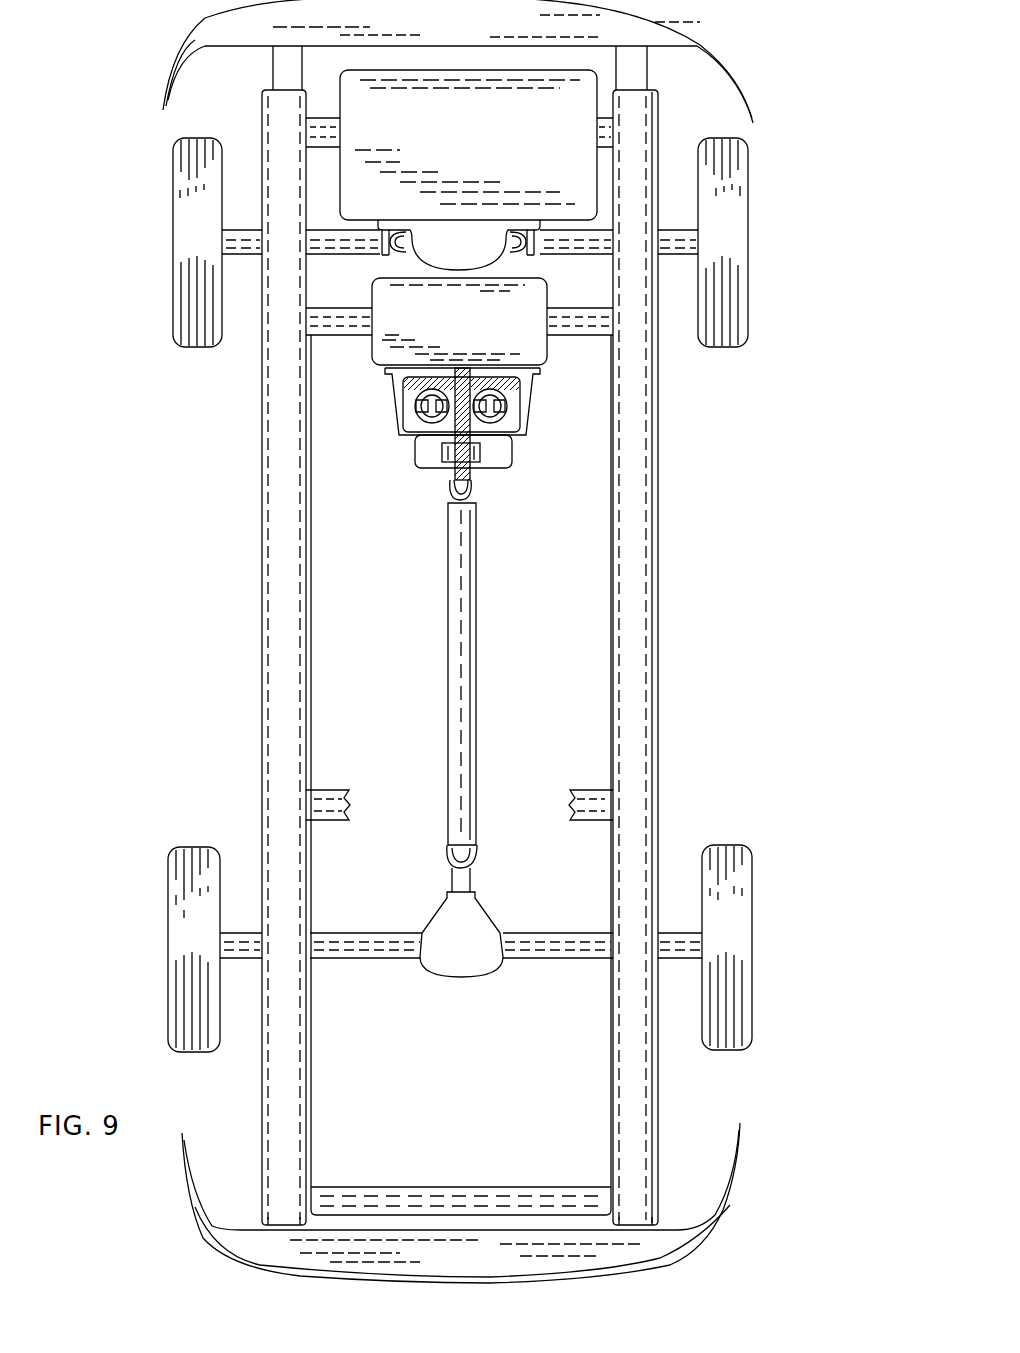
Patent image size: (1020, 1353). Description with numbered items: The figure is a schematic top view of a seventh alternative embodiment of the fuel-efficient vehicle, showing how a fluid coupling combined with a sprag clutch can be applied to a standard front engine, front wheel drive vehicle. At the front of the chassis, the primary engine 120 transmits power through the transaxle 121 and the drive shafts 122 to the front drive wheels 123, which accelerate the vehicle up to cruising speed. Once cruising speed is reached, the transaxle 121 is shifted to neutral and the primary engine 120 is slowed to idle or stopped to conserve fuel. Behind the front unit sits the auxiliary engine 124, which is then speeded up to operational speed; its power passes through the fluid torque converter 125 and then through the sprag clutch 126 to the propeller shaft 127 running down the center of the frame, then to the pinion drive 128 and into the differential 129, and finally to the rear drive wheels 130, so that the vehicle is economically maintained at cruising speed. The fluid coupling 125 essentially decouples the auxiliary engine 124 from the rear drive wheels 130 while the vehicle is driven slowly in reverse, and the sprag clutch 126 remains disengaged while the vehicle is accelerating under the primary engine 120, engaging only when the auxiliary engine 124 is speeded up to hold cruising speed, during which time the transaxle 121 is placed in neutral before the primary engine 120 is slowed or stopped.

The primary engine 120 is at (488, 167).
The transaxle 121 is at (487, 255).
The drive shafts 122 is at (243, 258).
The front drive wheels 123 is at (173, 188).
The auxiliary engine 124 is at (484, 333).
The fluid torque converter 125 is at (515, 418).
The sprag clutch 126 is at (482, 455).
The propeller shaft 127 is at (477, 603).
The pinion drive 128 is at (470, 877).
The differential 129 is at (482, 958).
The rear drive wheels 130 is at (168, 908).